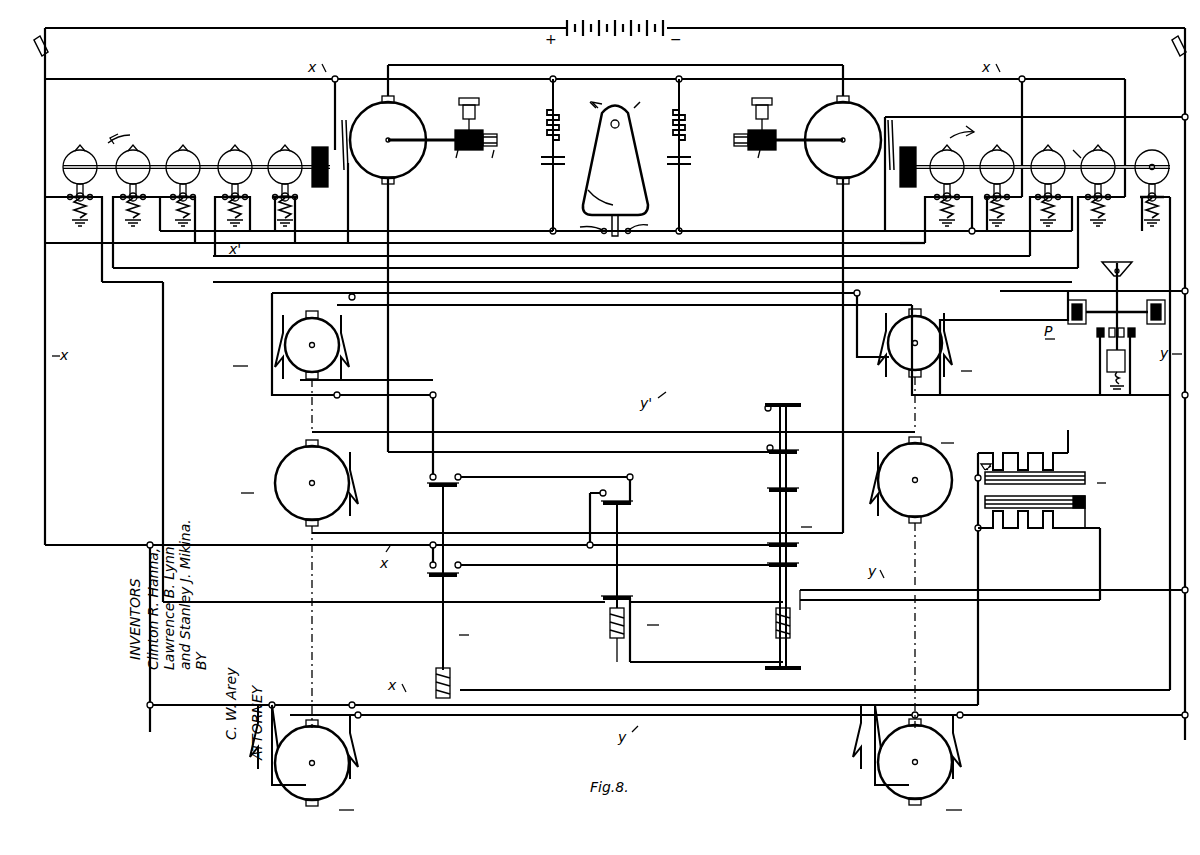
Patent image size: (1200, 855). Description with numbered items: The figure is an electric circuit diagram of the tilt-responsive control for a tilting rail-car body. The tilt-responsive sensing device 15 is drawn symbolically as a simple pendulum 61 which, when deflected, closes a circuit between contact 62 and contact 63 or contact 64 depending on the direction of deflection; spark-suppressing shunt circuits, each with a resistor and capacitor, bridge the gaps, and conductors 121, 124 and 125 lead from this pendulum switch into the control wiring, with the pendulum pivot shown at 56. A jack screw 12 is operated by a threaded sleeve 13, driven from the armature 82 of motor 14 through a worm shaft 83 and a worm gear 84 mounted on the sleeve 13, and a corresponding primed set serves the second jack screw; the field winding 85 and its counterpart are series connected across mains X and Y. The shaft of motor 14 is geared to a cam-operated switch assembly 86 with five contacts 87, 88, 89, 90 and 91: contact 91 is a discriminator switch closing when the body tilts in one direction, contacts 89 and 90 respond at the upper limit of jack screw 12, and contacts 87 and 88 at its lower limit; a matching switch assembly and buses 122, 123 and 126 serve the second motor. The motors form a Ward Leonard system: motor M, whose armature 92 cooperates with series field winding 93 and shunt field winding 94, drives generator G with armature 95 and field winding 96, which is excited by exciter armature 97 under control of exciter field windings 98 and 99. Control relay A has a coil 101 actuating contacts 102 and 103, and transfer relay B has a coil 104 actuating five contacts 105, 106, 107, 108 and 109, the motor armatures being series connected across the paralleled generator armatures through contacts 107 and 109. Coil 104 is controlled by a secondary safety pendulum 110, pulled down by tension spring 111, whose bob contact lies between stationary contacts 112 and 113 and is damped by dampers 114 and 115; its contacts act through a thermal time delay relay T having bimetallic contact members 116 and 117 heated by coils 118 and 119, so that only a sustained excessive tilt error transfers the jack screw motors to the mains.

The jack screw 12 is at (487, 114).
The threaded sleeve 13 is at (485, 136).
The motor 14 is at (384, 134).
The tilt-responsive sensing device 15 is at (621, 166).
The pendulum pivot 56 is at (628, 104).
The pendulum 61 is at (634, 180).
The contact 62 is at (614, 236).
The contact 63 is at (585, 221).
The contact 64 is at (647, 221).
The armature 82 is at (422, 113).
The worm shaft 83 is at (457, 164).
The worm gear 84 is at (489, 164).
The field winding 85 is at (322, 138).
The switch assembly 86 is at (196, 175).
The contact 87 is at (300, 201).
The contact 88 is at (247, 190).
The contact 89 is at (196, 190).
The contact 90 is at (143, 205).
The discriminator switch contact 91 is at (65, 205).
The armature 92 is at (311, 757).
The series field winding 93 is at (240, 742).
The shunt field winding 94 is at (371, 747).
The armature 95 is at (294, 483).
The field winding 96 is at (365, 484).
The armature 97 is at (285, 339).
The exciter field winding 98 is at (259, 347).
The exciter field winding 99 is at (358, 347).
The control coil 101 is at (463, 683).
The contact 102 is at (461, 579).
The contact 103 is at (462, 576).
The coil 104 is at (792, 632).
The contact 105 is at (764, 568).
The contact 106 is at (764, 546).
The contact 107 is at (764, 490).
The contact 108 is at (766, 456).
The contact 109 is at (762, 408).
The secondary pendulum 110 is at (778, 670).
The tension spring 111 is at (1128, 377).
The stationary contact 112 is at (1096, 335).
The stationary contact 113 is at (1135, 335).
The hydraulic damper 114 is at (1076, 300).
The hydraulic damper 115 is at (1154, 298).
The bimetallic contact member 116 is at (1046, 486).
The bimetallic contact member 117 is at (1072, 508).
The heating coil 118 is at (1054, 452).
The heating coil 119 is at (1044, 528).
The conductor 121 is at (476, 220).
The conductor 122 is at (1003, 253).
The conductor 123 is at (490, 312).
The conductor 124 is at (754, 221).
The conductor 125 is at (929, 245).
The conductor 126 is at (720, 306).